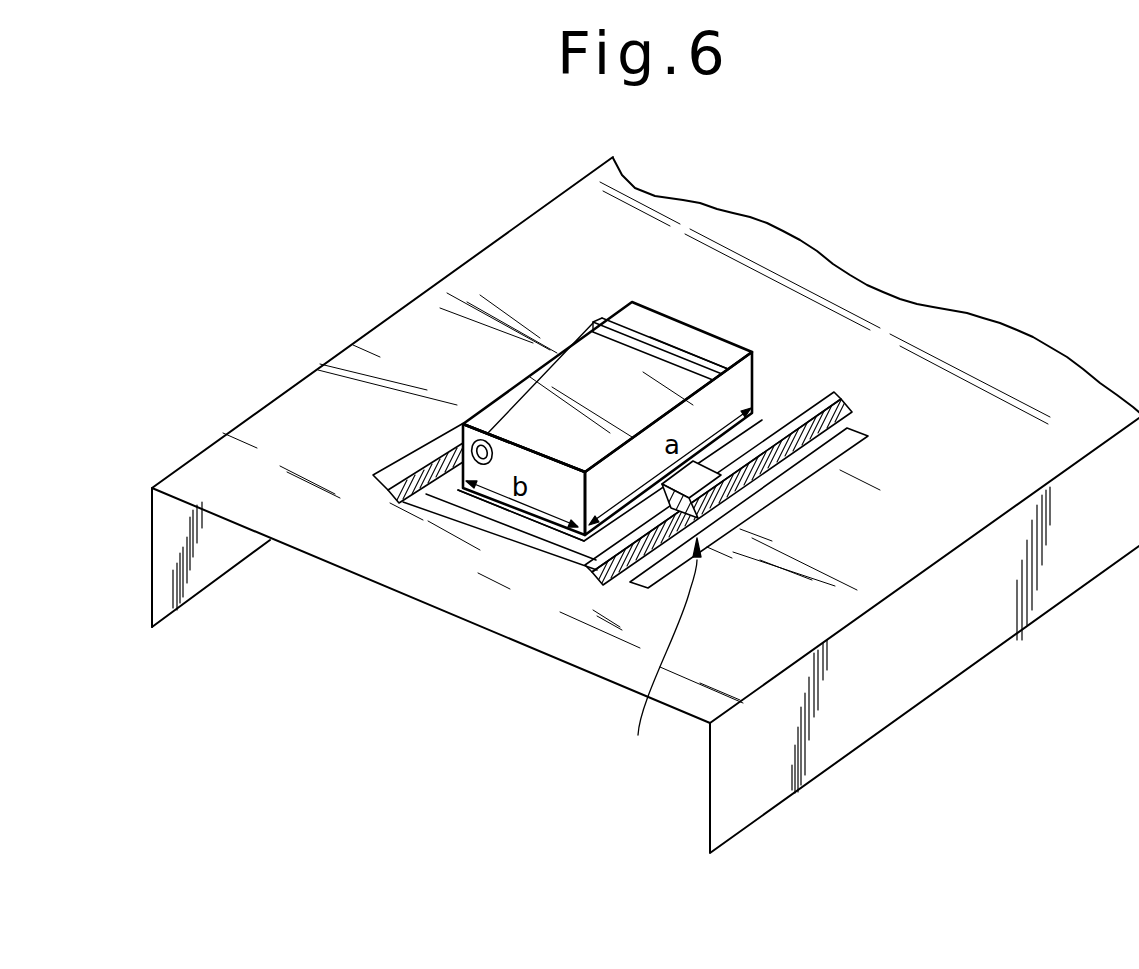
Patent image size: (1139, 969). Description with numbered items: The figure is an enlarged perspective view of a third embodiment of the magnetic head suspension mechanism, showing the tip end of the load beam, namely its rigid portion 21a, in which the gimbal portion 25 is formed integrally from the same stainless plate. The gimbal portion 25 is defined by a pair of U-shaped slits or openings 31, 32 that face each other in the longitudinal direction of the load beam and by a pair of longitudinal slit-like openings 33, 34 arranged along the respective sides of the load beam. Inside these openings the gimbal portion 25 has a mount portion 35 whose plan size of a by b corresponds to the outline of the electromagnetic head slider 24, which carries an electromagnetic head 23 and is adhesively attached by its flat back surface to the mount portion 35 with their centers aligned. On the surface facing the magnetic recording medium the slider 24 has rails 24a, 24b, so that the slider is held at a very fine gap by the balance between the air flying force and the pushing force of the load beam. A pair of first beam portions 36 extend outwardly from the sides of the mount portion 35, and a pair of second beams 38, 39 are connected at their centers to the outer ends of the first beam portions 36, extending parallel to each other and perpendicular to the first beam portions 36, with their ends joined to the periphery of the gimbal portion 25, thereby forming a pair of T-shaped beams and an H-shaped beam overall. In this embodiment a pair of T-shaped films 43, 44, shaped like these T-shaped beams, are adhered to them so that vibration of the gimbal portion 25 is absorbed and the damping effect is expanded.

The rigid portion 21a is at (932, 638).
The electromagnetic head 23 is at (462, 434).
The electromagnetic head slider 24 is at (587, 372).
The rail 24a is at (614, 321).
The rail 24b is at (707, 370).
The gimbal portion 25 is at (660, 651).
The U-shaped slit or opening 31 is at (495, 514).
The U-shaped slit or opening 32 is at (780, 411).
The longitudinal slit-like opening 33 is at (723, 538).
The longitudinal slit-like opening 34 is at (392, 472).
The mount portion 35 is at (565, 529).
The first beam portion 36 is at (710, 472).
The second beam 38 is at (795, 458).
The second beam 39 is at (471, 452).
The T-shaped film 43 is at (598, 577).
The T-shaped film 44 is at (400, 494).